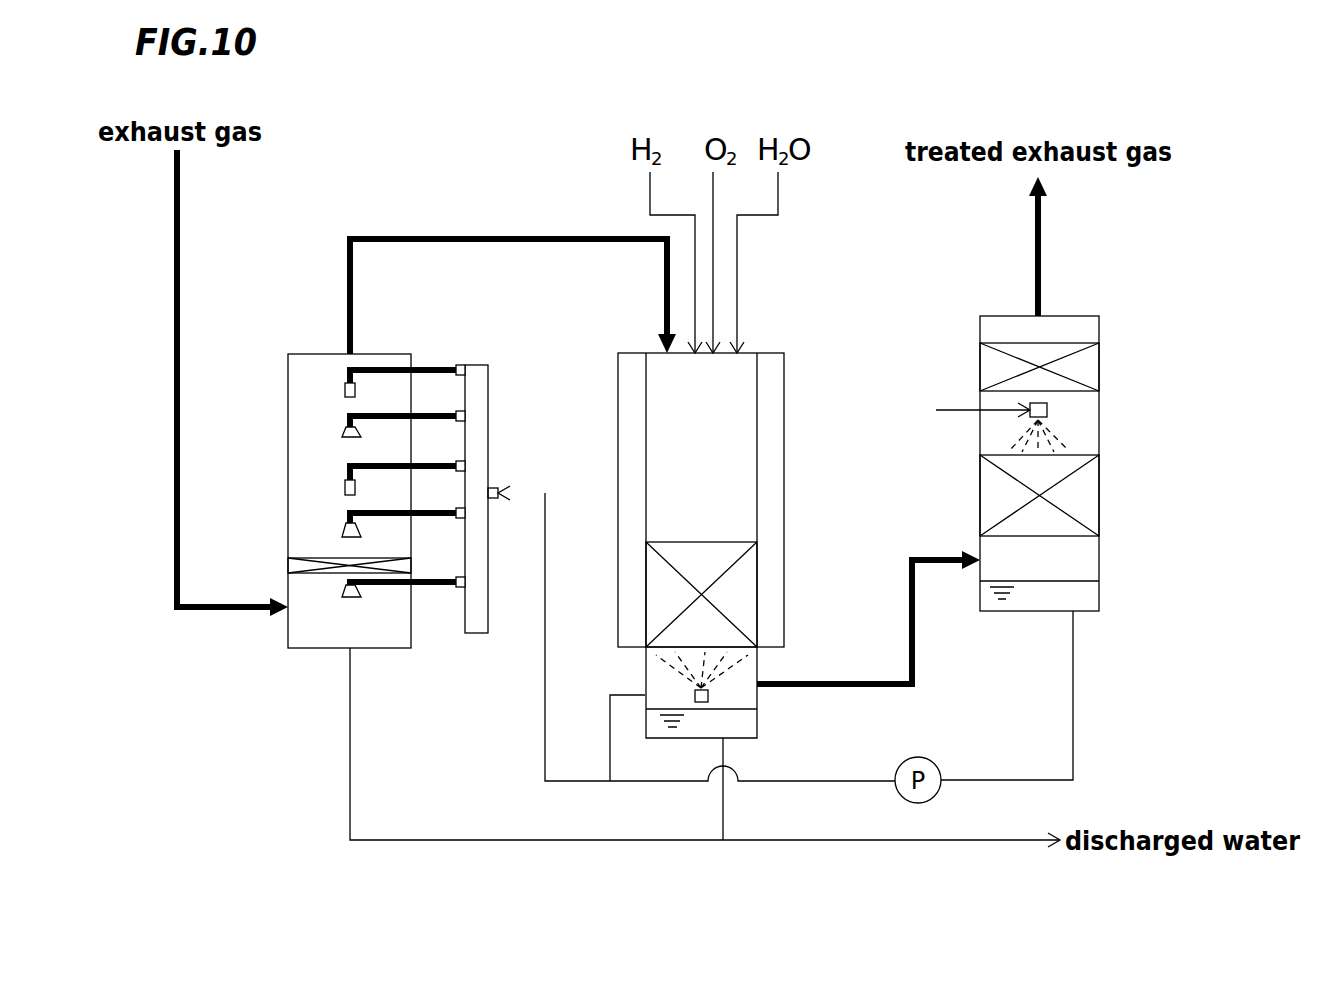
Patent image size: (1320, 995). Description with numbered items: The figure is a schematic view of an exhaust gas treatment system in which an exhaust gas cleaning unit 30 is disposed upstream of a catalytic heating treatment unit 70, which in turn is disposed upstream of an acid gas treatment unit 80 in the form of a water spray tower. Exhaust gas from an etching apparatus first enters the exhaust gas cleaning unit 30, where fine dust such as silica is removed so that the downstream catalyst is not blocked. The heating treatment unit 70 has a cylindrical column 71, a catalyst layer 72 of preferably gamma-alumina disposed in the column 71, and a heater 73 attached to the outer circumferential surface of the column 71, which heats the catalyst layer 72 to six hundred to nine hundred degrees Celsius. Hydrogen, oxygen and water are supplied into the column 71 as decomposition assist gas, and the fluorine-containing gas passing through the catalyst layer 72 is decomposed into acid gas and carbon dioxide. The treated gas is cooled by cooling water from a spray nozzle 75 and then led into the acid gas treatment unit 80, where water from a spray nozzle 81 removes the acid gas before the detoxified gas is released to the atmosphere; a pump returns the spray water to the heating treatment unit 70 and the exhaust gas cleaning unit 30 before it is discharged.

The exhaust gas cleaning unit 30 is at (269, 426).
The catalytic heating treatment unit 70 is at (701, 521).
The cylindrical column 71 is at (757, 505).
The catalyst layer 72 is at (740, 594).
The heater 73 is at (778, 399).
The spray nozzle 75 is at (708, 697).
The acid gas treatment unit 80 is at (1067, 426).
The spray nozzle 81 is at (1047, 410).